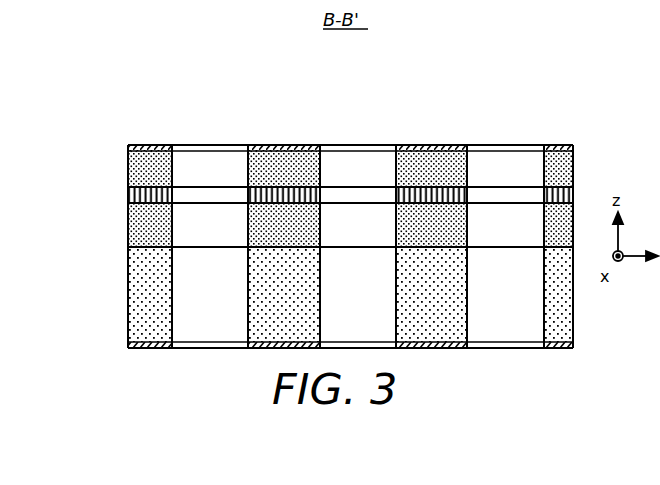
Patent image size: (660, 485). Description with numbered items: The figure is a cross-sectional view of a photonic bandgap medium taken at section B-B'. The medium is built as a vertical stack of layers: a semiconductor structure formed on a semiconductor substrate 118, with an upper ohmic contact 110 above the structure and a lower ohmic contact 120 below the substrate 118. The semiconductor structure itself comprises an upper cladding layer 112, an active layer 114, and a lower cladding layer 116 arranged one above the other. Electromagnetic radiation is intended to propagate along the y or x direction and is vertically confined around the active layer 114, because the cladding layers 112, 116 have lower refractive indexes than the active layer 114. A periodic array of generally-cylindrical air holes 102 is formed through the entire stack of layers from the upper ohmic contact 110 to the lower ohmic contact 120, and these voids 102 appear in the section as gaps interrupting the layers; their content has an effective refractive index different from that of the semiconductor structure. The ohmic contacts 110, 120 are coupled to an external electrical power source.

The air holes 102 is at (210, 127).
The upper ohmic contact 110 is at (127, 146).
The upper cladding layer 112 is at (127, 168).
The active layer 114 is at (127, 194).
The lower cladding layer 116 is at (127, 222).
The semiconductor substrate 118 is at (127, 285).
The lower ohmic contact 120 is at (127, 342).